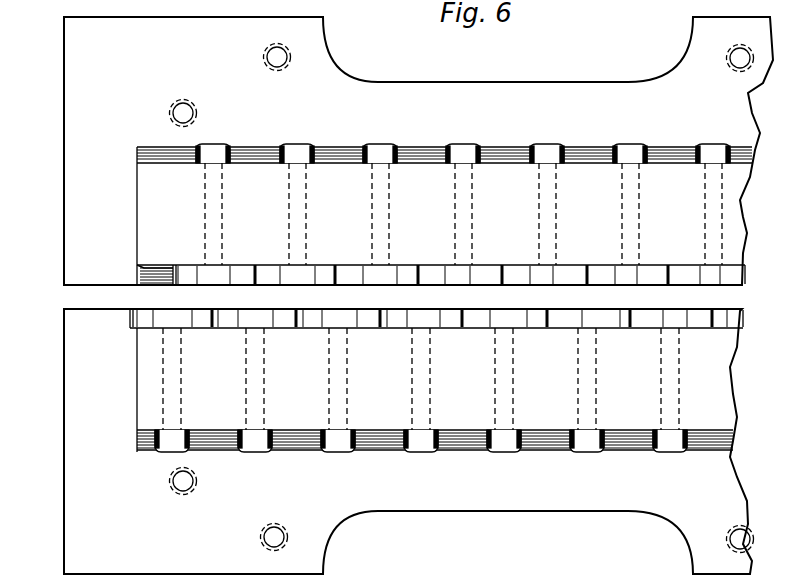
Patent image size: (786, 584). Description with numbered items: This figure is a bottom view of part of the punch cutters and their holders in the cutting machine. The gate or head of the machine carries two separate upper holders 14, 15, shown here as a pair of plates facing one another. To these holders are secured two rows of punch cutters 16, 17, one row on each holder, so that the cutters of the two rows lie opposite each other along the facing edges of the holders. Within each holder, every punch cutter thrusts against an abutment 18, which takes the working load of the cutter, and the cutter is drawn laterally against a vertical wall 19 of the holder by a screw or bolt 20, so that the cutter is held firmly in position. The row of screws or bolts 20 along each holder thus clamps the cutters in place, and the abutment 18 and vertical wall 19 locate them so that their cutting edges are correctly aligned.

The upper holder 14 is at (72, 198).
The upper holder 15 is at (75, 422).
The punch cutters 16 is at (571, 276).
The punch cutters 17 is at (567, 320).
The abutment 18 is at (152, 277).
The vertical wall 19 is at (162, 266).
The screw or bolt 20 is at (215, 152).